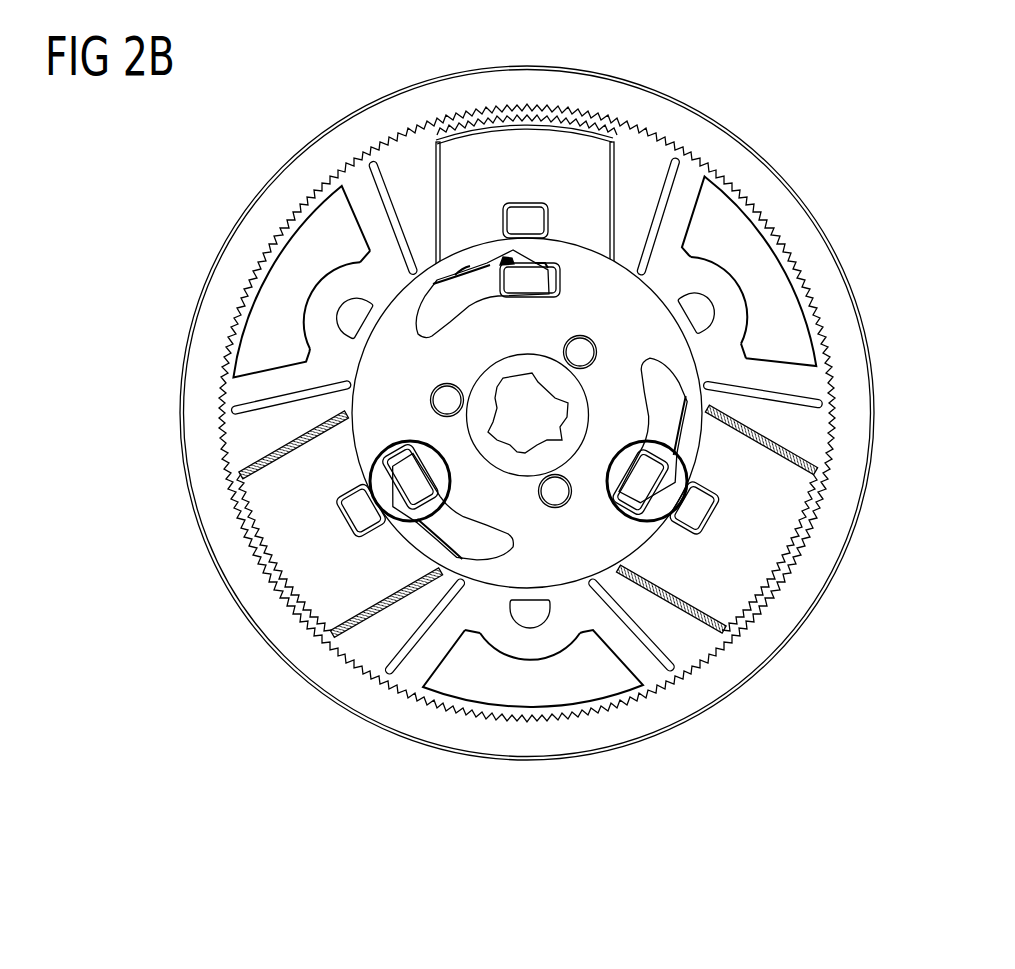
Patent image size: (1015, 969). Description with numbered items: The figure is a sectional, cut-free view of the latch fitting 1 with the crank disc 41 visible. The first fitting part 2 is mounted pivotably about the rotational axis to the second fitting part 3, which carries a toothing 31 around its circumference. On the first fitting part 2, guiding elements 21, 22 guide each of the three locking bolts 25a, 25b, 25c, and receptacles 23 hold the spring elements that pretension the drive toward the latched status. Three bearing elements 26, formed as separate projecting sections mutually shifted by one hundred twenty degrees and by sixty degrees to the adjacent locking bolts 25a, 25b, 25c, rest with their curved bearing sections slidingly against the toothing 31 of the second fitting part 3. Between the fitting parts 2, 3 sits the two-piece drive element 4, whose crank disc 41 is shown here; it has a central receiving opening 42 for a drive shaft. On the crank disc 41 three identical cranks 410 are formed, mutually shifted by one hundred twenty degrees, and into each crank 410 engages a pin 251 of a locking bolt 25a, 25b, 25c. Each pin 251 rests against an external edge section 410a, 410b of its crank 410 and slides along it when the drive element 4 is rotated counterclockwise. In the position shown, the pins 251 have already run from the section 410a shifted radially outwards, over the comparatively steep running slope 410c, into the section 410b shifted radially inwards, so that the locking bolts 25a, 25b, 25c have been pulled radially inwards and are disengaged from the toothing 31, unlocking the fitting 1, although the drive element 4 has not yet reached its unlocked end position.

The latch fitting 1 is at (912, 170).
The first fitting part 2 is at (803, 388).
The second fitting part 3 is at (858, 343).
The drive element 4 is at (648, 330).
The guiding element 21 is at (398, 162).
The guiding element 22 is at (662, 180).
The receptacle 23 is at (525, 650).
The locking bolt 25a is at (580, 148).
The locking bolt 25b is at (768, 540).
The locking bolt 25c is at (320, 585).
The bearing element 26 is at (748, 240).
The toothing 31 is at (800, 313).
The crank disc 41 is at (547, 359).
The central receiving opening 42 is at (545, 418).
The pin 251 is at (520, 285).
The crank 410 is at (485, 280).
The section shifted radially outwards 410a is at (467, 272).
The section shifted radially inwards 410b is at (540, 263).
The steep running slope 410c is at (503, 257).